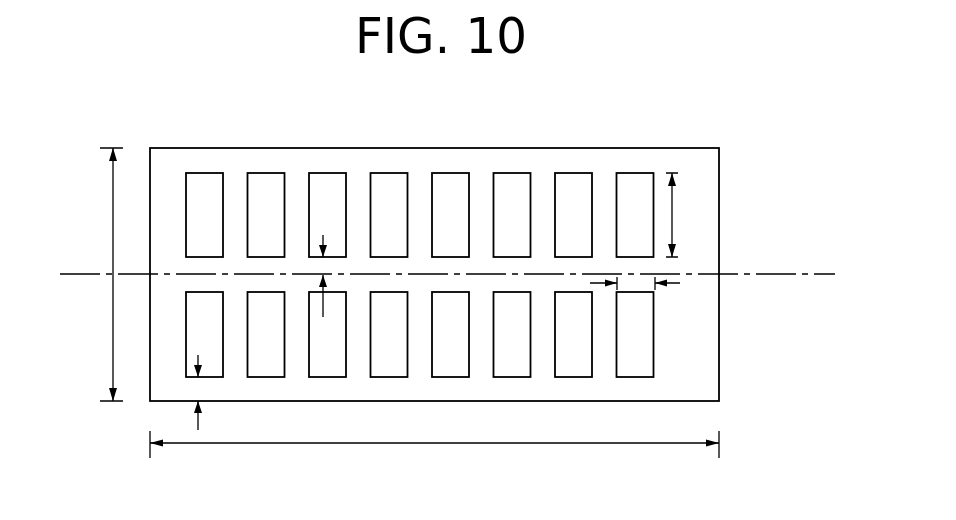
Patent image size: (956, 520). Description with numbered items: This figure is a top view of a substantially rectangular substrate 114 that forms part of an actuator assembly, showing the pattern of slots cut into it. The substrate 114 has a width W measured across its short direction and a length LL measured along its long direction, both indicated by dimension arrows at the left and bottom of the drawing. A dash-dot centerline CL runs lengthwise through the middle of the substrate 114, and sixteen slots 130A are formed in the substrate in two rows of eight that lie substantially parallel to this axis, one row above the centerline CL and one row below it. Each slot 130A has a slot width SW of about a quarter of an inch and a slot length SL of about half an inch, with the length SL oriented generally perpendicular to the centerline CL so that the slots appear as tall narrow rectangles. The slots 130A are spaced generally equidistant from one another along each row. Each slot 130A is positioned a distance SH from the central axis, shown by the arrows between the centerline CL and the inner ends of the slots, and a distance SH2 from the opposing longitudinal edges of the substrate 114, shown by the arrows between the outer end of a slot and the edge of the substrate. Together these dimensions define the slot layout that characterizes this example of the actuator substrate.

The substrate 114 is at (693, 148).
The slots 130A is at (323, 173).
The width W is at (113, 300).
The slot width SW is at (672, 213).
The slot length SL is at (680, 283).
The slot distance from axis SH is at (323, 235).
The slot distance from longitudinal edge SH2 is at (198, 387).
The length LL is at (425, 444).
The axis CL is at (797, 277).